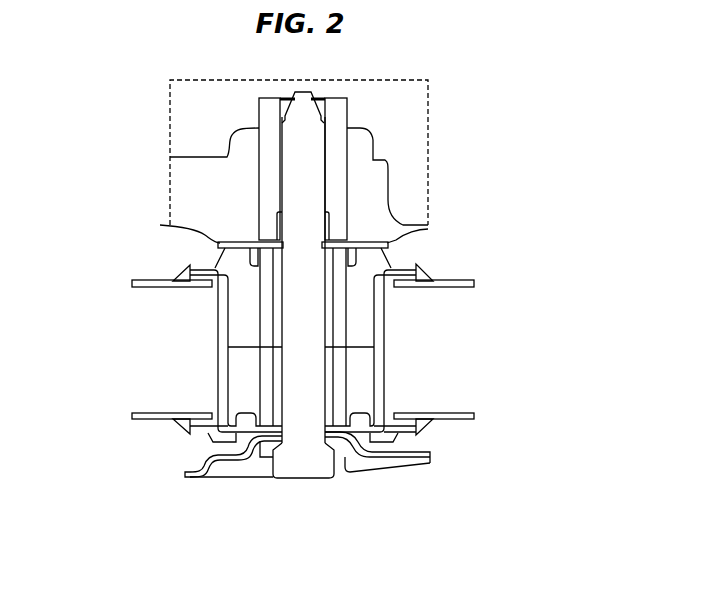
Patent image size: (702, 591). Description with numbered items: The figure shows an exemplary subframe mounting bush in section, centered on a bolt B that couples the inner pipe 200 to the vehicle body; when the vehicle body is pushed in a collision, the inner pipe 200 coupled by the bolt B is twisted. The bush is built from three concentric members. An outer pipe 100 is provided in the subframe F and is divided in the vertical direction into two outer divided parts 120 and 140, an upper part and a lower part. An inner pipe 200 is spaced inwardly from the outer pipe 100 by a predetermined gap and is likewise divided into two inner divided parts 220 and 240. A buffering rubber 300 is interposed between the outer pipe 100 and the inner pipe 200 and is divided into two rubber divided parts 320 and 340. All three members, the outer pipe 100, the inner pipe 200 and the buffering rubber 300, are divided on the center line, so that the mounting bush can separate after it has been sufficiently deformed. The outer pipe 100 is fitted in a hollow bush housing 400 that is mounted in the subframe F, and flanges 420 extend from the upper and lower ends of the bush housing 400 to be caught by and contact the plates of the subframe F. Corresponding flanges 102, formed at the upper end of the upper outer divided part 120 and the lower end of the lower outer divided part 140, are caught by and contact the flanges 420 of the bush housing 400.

The bolt B is at (318, 180).
The subframe F is at (150, 278).
The corresponding flanges 102 is at (212, 270).
The outer pipe 100 is at (420, 345).
The outer divided part 120 is at (378, 321).
The outer divided part 140 is at (378, 368).
The inner pipe 200 is at (187, 337).
The inner divided part 220 is at (262, 325).
The inner divided part 240 is at (265, 363).
The buffering rubber 300 is at (364, 452).
The rubber divided part 320 is at (342, 442).
The rubber divided part 340 is at (358, 335).
The bush housing 400 is at (222, 388).
The flanges 420 is at (200, 425).